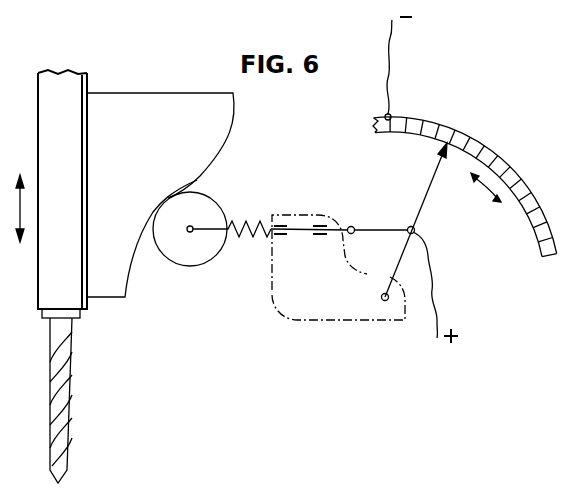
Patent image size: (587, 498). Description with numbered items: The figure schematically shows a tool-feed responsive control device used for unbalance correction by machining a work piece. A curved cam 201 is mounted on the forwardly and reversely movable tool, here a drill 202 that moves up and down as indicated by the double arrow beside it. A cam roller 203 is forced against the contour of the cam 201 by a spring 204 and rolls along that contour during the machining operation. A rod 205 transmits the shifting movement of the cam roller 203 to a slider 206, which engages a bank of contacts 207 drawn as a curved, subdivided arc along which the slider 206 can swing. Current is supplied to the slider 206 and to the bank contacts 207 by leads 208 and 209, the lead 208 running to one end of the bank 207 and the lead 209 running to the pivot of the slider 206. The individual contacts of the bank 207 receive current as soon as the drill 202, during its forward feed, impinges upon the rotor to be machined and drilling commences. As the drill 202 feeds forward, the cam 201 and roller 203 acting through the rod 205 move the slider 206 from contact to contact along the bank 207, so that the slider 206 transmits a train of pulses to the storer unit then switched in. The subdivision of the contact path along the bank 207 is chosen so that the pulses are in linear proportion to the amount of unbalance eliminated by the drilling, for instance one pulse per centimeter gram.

The curved cam 201 is at (224, 150).
The drill 202 is at (65, 380).
The cam roller 203 is at (178, 255).
The spring 204 is at (242, 222).
The rod 205 is at (403, 228).
The slider 206 is at (429, 184).
The bank of contacts 207 is at (500, 139).
The lead 208 is at (391, 76).
The lead 209 is at (433, 300).